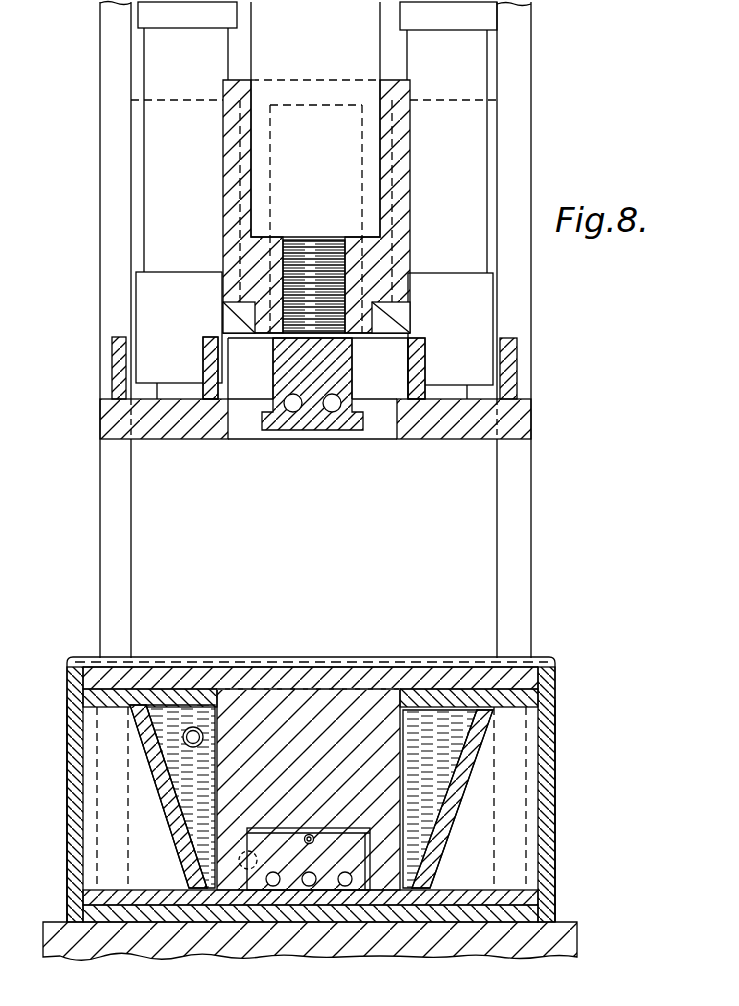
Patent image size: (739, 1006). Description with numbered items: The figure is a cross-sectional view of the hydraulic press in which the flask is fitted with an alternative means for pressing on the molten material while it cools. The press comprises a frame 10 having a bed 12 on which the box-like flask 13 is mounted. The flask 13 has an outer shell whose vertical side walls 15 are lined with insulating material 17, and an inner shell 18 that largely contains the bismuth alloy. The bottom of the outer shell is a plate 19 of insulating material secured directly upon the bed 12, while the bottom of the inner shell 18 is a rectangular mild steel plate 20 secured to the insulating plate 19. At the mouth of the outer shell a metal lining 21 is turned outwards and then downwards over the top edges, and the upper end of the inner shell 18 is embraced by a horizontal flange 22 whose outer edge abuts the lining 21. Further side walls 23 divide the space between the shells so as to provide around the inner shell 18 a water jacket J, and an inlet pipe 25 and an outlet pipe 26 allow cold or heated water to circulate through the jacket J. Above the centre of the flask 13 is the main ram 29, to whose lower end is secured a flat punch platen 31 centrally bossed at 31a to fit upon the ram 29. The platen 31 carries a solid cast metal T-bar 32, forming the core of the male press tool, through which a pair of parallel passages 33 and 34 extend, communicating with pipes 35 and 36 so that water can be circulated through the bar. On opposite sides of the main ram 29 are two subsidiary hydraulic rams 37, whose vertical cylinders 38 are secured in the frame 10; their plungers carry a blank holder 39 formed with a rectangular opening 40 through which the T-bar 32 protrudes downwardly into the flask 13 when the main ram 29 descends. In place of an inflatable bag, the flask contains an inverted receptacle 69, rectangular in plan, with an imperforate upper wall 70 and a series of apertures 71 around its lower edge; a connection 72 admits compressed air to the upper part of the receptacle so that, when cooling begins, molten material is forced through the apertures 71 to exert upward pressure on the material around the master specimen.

The frame 10 is at (111, 483).
The bed 12 is at (253, 925).
The flask 13 is at (553, 717).
The side walls 15 is at (70, 830).
The insulating material 17 is at (76, 767).
The inner shell 18 is at (185, 778).
The plate of insulating material 19 is at (137, 912).
The mild steel plate 20 is at (85, 893).
The metal lining 21 is at (73, 658).
The flange 22 is at (88, 693).
The side walls 23 is at (195, 848).
The inlet pipe 25 is at (183, 737).
The outlet pipe 26 is at (227, 922).
The main ram 29 is at (292, 210).
The punch platen 31 is at (230, 318).
The boss 31a is at (396, 176).
The T-bar 32 is at (307, 390).
The passage 33 is at (285, 393).
The passage 34 is at (340, 393).
The inlet pipe 35 is at (255, 120).
The outlet pipe 36 is at (377, 160).
The subsidiary hydraulic rams 37 is at (170, 390).
The vertical cylinders 38 is at (165, 202).
The blank holder 39 is at (518, 415).
The rectangular opening 40 is at (378, 420).
The inverted receptacle 69 is at (368, 857).
The imperforate upper wall 70 is at (310, 836).
The apertures 71 is at (345, 886).
The connection 72 is at (303, 886).
The water jacket J is at (193, 820).